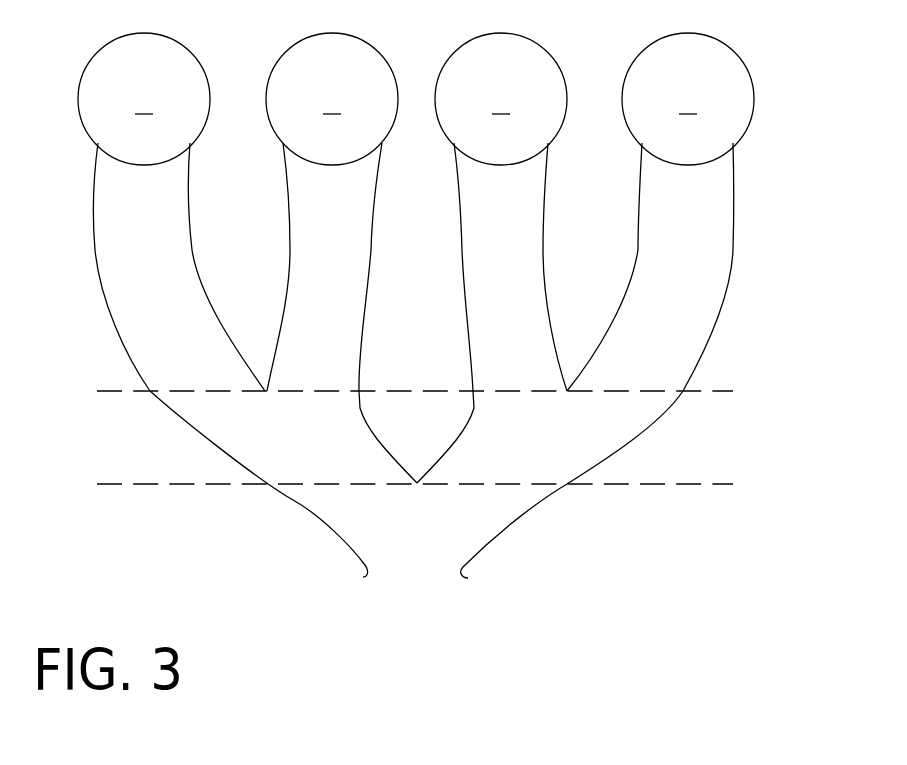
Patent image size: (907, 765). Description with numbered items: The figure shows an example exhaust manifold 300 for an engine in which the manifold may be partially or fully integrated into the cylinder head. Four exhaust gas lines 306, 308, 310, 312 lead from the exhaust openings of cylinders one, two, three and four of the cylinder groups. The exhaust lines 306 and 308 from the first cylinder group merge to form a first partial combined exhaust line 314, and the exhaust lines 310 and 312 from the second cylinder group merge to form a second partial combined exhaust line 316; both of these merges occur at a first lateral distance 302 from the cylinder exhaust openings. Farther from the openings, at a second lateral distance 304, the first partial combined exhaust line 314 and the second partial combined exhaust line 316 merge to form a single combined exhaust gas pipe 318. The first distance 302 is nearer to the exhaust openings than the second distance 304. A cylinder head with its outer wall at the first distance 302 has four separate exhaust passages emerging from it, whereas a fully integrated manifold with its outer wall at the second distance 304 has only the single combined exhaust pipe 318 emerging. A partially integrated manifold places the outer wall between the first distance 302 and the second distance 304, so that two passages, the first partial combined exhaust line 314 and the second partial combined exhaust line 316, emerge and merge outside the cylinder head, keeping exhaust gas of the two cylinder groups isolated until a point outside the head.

The exhaust manifold 300 is at (795, 157).
The first lateral distance 302 is at (697, 391).
The second lateral distance 304 is at (697, 484).
The exhaust gas line 306 is at (157, 222).
The exhaust gas line 308 is at (354, 217).
The exhaust gas line 310 is at (524, 217).
The exhaust gas line 312 is at (712, 207).
The first partial combined exhaust line 314 is at (292, 451).
The second partial combined exhaust line 316 is at (563, 451).
The combined exhaust gas pipe 318 is at (434, 554).